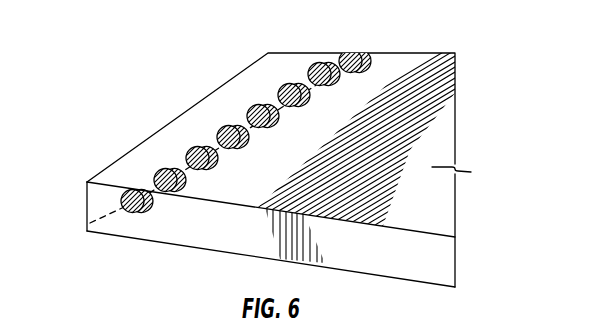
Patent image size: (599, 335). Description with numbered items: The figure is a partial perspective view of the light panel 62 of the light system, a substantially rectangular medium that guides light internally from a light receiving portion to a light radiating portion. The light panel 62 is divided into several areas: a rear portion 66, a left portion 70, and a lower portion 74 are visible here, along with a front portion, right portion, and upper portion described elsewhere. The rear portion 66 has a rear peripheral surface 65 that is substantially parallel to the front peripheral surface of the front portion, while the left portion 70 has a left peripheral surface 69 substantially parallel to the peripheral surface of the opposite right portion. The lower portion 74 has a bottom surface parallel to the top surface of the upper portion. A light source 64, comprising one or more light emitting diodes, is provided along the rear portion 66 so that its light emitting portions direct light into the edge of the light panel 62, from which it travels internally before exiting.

The light panel 62 is at (417, 65).
The light source 64 is at (130, 212).
The rear peripheral surface 65 is at (87, 200).
The rear portion 66 is at (270, 72).
The left peripheral surface 69 is at (356, 258).
The left portion 70 is at (437, 233).
The lower portion 74 is at (248, 254).